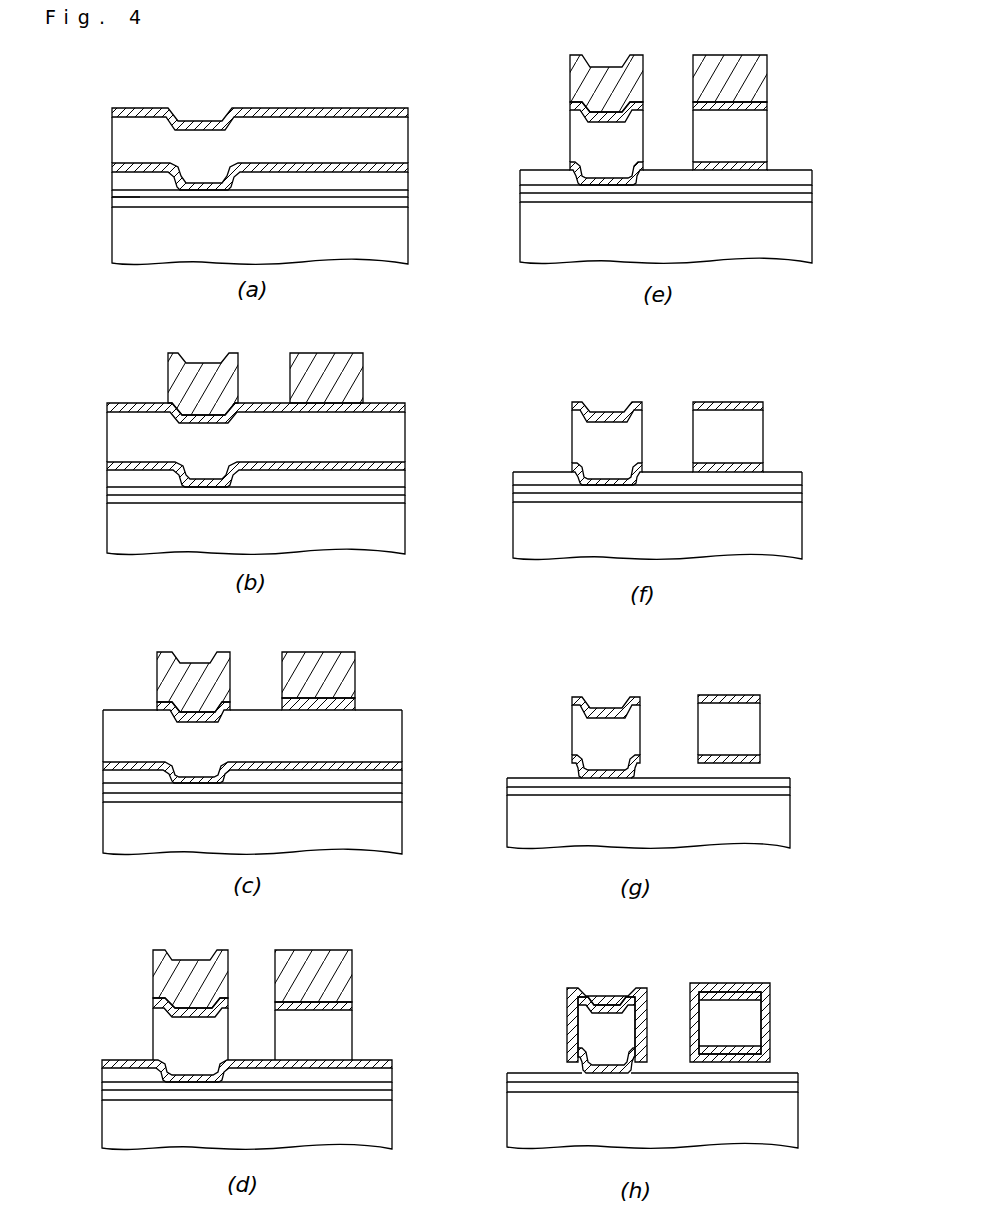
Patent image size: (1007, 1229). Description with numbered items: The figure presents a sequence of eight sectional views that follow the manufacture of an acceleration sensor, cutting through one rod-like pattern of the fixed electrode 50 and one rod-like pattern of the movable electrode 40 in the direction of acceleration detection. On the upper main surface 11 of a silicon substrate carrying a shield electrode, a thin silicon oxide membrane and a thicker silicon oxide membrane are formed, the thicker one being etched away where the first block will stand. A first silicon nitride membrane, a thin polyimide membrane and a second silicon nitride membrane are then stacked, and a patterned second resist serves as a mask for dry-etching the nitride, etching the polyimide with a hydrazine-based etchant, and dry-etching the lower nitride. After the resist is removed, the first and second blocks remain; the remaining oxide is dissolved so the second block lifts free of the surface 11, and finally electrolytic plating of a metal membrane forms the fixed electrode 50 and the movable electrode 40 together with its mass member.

The upper main surface 11 is at (140, 204).
The fixed electrode 50 is at (586, 1009).
The movable electrode 40 is at (753, 1001).